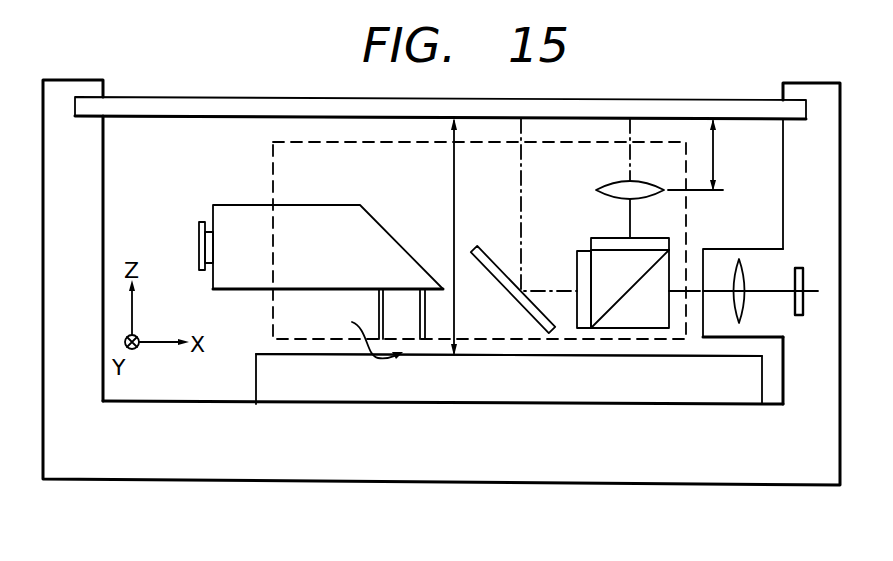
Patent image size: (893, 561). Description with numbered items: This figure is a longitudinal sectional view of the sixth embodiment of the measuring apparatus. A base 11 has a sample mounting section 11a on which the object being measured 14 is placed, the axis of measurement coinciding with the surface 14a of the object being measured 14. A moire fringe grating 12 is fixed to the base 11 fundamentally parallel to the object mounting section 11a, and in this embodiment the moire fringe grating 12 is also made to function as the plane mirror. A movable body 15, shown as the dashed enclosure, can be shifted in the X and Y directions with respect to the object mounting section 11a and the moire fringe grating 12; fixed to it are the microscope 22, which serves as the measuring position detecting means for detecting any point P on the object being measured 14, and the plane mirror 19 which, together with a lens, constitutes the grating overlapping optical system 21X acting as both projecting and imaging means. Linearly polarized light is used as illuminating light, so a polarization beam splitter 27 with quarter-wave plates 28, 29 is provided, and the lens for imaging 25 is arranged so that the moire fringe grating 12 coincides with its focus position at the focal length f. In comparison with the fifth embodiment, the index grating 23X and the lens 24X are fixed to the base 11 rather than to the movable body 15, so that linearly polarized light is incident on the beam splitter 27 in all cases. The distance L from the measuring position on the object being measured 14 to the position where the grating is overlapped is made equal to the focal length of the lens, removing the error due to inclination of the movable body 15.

The base 11 is at (180, 465).
The sample mounting section 11a is at (218, 398).
The moire fringe grating 12 is at (750, 110).
The object being measured 14 is at (727, 395).
The surface of the object being measured 14a is at (433, 355).
The movable body 15 is at (270, 159).
The plane mirror 19 is at (487, 283).
The grating overlapping optical system 21X is at (472, 187).
The microscope 22 is at (236, 204).
The index grating 23X is at (807, 277).
The lens 24X is at (733, 270).
The lens for imaging 25 is at (607, 182).
The polarization beam splitter 27 is at (638, 320).
The quarter-wave plate 28 is at (582, 272).
The quarter-wave plate 29 is at (607, 238).
The reference point P is at (369, 331).
The distance L is at (457, 230).
The focal length f is at (718, 162).